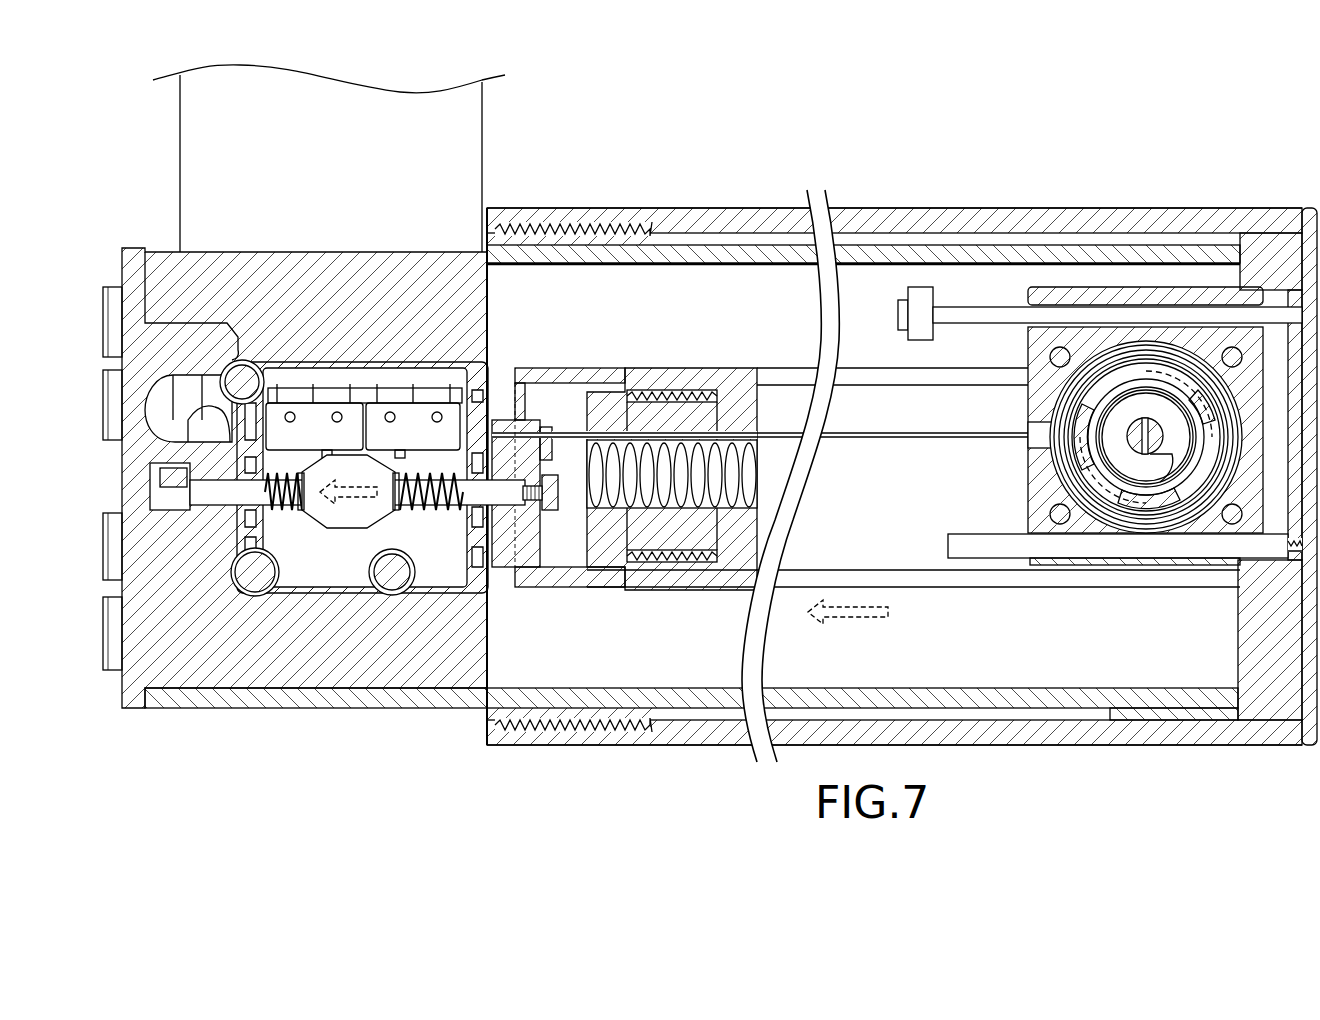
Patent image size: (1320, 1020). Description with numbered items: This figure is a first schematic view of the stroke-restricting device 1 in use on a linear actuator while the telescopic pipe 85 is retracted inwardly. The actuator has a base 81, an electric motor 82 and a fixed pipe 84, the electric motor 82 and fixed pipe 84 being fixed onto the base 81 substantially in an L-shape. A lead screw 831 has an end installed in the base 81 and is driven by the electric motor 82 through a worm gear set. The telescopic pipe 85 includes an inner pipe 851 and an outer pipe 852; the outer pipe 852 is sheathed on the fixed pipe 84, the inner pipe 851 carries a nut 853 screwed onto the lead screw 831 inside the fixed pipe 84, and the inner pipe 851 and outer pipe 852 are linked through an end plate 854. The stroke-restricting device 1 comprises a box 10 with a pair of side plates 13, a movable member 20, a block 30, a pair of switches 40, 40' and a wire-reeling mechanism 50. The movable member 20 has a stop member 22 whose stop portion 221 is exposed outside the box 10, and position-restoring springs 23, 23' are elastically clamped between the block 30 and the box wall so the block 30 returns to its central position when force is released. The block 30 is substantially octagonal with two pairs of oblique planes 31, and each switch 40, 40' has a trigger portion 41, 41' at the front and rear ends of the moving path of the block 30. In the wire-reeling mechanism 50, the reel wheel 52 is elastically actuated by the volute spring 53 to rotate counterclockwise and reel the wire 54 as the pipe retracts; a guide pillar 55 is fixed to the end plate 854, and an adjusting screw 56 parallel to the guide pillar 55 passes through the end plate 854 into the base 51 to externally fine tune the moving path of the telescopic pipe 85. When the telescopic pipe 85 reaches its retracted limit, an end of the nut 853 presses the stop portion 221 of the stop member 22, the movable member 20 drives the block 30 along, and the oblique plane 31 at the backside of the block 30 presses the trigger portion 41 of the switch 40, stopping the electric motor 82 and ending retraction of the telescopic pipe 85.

The stroke-restricting device 1 is at (500, 368).
The box 10 is at (450, 352).
The side plates 13 is at (425, 590).
The movable member 20 is at (210, 492).
The stop member 22 is at (545, 383).
The stop portion 221 is at (538, 560).
The position-restoring spring 23 is at (267, 620).
The position-restoring spring 23' is at (473, 560).
The block 30 is at (348, 512).
The oblique planes 31 is at (275, 372).
The switch 40 is at (314, 323).
The switch 40' is at (413, 321).
The trigger portion 41 is at (365, 337).
The trigger portion 41' is at (363, 318).
The wire-reeling mechanism 50 is at (1217, 133).
The base 51 is at (1183, 280).
The reel wheel 52 is at (1112, 360).
The volute spring 53 is at (1141, 382).
The wire 54 is at (890, 437).
The guide pillar 55 is at (987, 550).
The adjusting screw 56 is at (975, 313).
The base 81 is at (151, 243).
The electric motor 82 is at (463, 117).
The lead screw 831 is at (723, 463).
The fixed pipe 84 is at (876, 260).
The telescopic pipe 85 is at (749, 205).
The inner pipe 851 is at (782, 225).
The outer pipe 852 is at (675, 383).
The nut 853 is at (613, 377).
The end plate 854 is at (1305, 222).